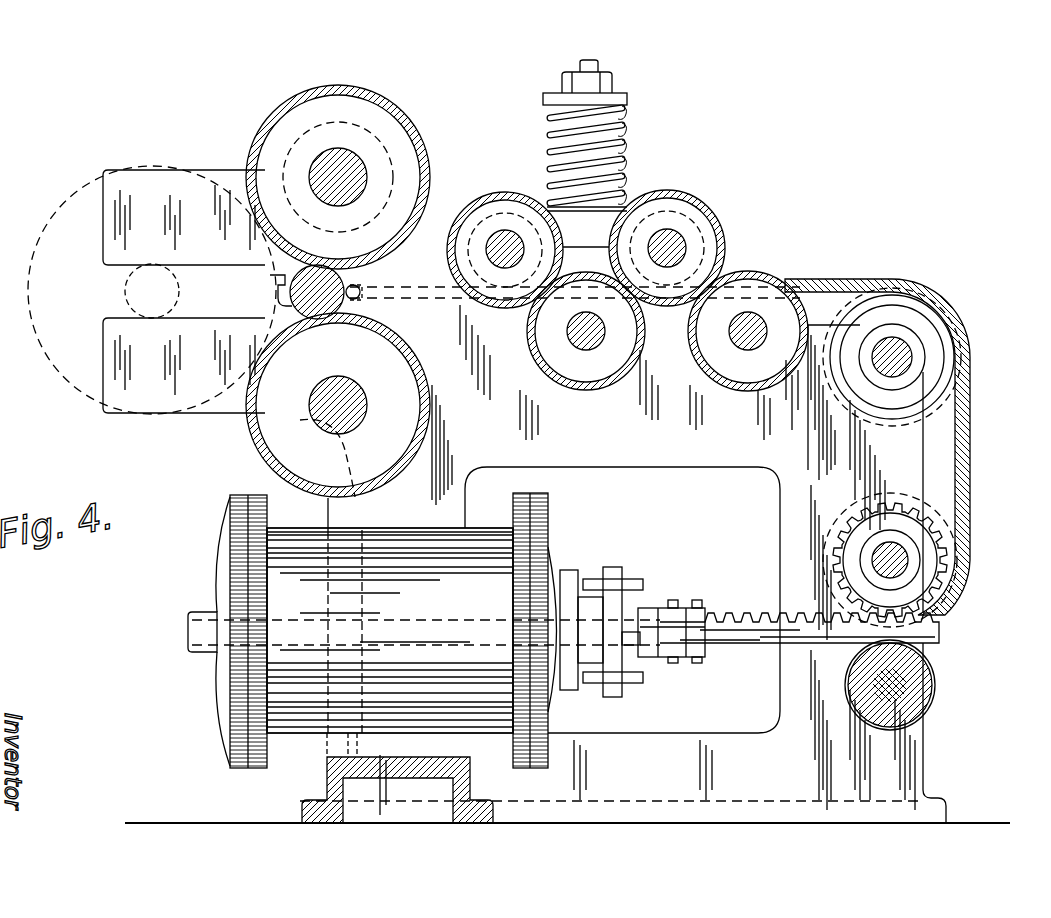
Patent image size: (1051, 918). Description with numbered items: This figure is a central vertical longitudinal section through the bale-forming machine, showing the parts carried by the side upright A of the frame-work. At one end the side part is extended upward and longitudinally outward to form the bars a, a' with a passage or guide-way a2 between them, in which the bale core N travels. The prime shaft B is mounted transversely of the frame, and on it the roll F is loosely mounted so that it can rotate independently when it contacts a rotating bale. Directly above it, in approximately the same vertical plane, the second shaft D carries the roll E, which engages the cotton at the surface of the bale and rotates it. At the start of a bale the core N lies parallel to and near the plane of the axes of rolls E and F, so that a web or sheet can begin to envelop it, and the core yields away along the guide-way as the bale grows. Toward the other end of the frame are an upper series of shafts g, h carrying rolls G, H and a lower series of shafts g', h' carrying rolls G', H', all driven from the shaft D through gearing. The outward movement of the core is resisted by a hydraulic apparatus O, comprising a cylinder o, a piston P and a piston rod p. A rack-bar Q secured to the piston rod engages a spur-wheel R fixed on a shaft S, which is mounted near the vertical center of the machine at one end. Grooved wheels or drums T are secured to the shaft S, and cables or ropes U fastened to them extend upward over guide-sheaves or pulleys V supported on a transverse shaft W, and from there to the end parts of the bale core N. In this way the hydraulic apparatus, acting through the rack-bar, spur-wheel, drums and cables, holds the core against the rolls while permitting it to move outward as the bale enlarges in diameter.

The side upright A is at (663, 564).
The roll E is at (288, 112).
The roll F is at (257, 450).
The second shaft D is at (353, 173).
The prime shaft B is at (350, 423).
The bale core N is at (300, 297).
The bar a' is at (184, 194).
The bar a is at (184, 382).
The passage or guide-way a2 is at (118, 335).
The roll H is at (505, 233).
The shaft h is at (485, 286).
The roll H' is at (586, 353).
The shaft h' is at (567, 372).
The roll G is at (679, 239).
The shaft g is at (675, 210).
The roll G' is at (748, 315).
The shaft g' is at (735, 369).
The guide-sheave or pulley V is at (947, 338).
The cable or rope U is at (966, 438).
The shaft W is at (893, 368).
The shaft S is at (898, 562).
The spur-wheel R is at (932, 570).
The grooved wheel or drum T is at (960, 593).
The rack-bar Q is at (622, 600).
The hydraulic apparatus O is at (392, 624).
The cylinder o is at (433, 532).
The piston P is at (330, 608).
The piston rod p is at (627, 627).